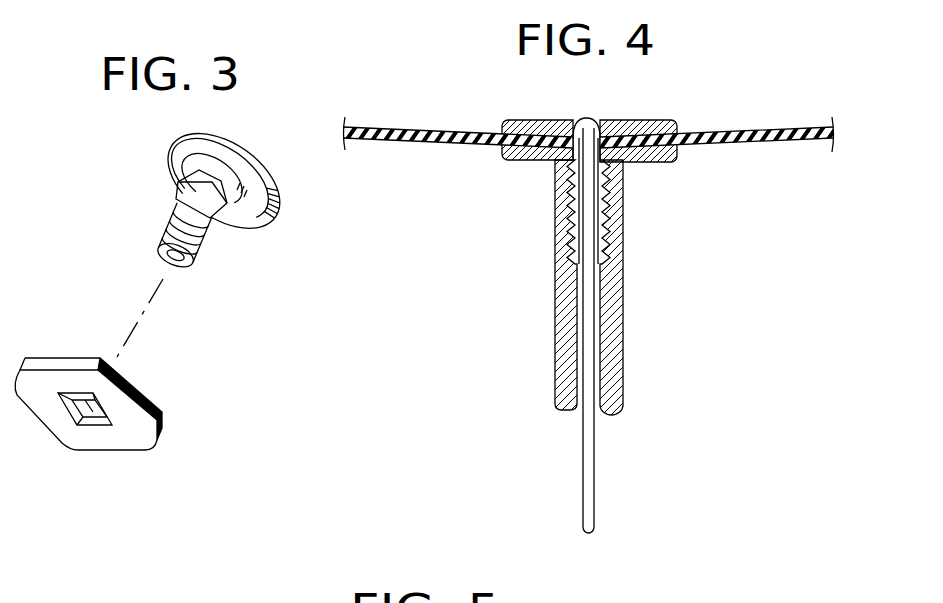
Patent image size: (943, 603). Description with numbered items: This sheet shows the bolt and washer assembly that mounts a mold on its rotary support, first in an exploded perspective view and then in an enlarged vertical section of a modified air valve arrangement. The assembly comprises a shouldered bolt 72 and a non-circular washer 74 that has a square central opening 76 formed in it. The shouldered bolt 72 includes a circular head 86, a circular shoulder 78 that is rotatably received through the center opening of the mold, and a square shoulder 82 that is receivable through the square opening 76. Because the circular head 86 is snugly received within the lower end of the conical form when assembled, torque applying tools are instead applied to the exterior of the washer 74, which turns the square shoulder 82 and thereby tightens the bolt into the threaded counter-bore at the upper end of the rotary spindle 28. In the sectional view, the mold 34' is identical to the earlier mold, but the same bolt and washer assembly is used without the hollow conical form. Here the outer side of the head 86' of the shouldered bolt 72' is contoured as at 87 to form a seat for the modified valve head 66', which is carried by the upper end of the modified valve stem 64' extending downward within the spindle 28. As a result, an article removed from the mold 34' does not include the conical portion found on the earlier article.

In FIG. 3, the shouldered bolt 72 is at (221, 198).
In FIG. 3, the circular head 86 is at (199, 175).
In FIG. 3, the circular shoulder 78 is at (198, 168).
In FIG. 3, the square shoulder 82 is at (220, 212).
In FIG. 3, the non-circular washer 74 is at (94, 438).
In FIG. 3, the square central opening 76 is at (72, 418).
In FIG. 4, the shouldered bolt 72' is at (512, 124).
In FIG. 4, the head 86' is at (654, 121).
In FIG. 4, the mold 34' is at (588, 153).
In FIG. 4, the rotary spindle 28 is at (553, 359).
In FIG. 4, the modified valve stem 64' is at (625, 330).
In FIG. 4, the modified valve head 66' is at (597, 107).
In FIG. 4, the contoured seat 87 is at (568, 119).